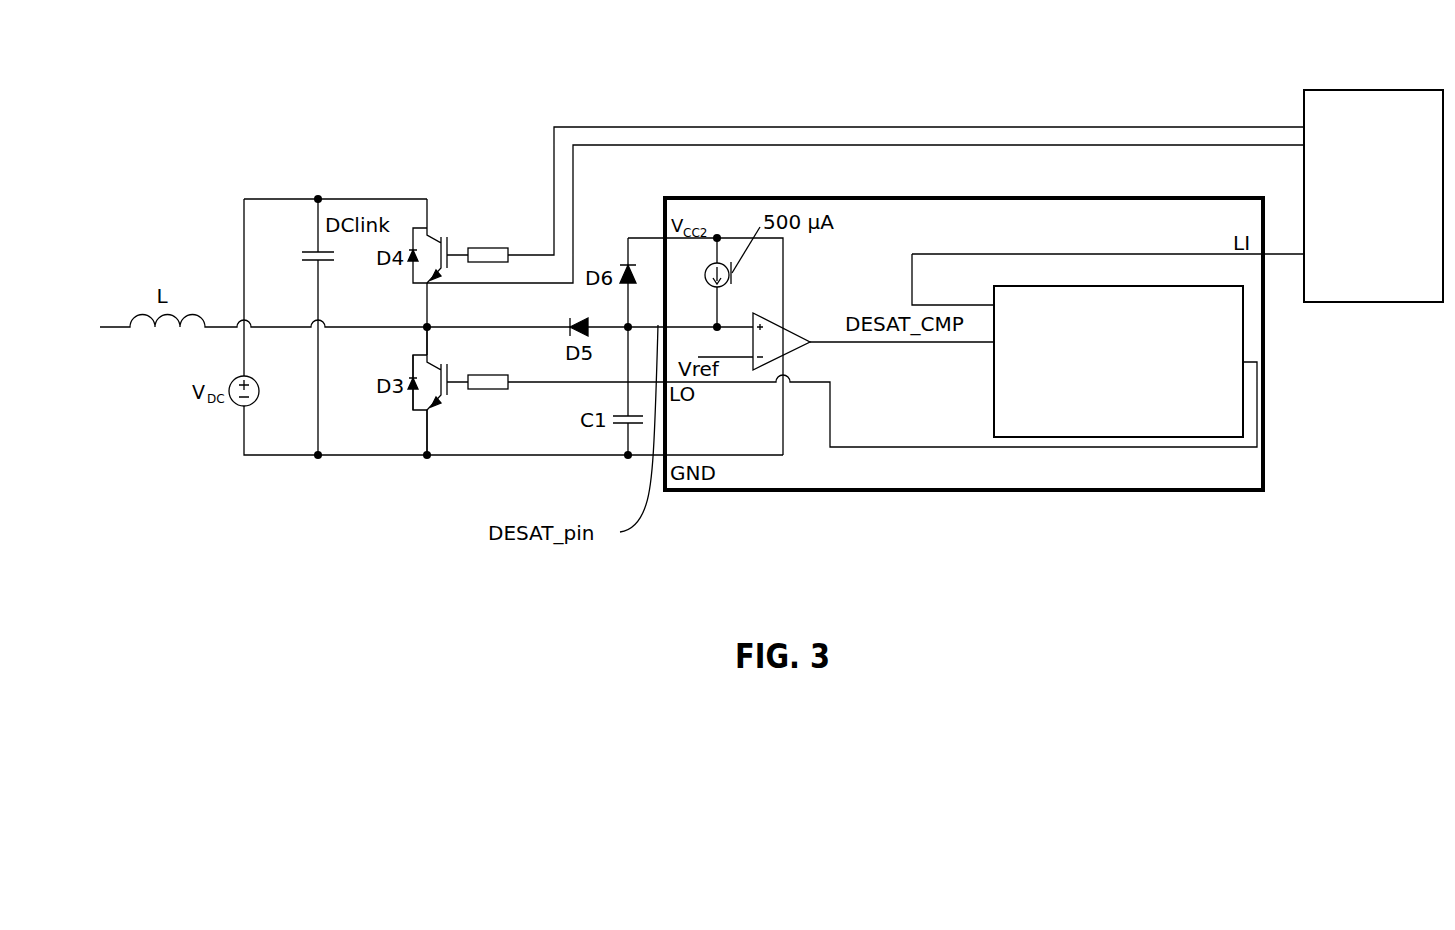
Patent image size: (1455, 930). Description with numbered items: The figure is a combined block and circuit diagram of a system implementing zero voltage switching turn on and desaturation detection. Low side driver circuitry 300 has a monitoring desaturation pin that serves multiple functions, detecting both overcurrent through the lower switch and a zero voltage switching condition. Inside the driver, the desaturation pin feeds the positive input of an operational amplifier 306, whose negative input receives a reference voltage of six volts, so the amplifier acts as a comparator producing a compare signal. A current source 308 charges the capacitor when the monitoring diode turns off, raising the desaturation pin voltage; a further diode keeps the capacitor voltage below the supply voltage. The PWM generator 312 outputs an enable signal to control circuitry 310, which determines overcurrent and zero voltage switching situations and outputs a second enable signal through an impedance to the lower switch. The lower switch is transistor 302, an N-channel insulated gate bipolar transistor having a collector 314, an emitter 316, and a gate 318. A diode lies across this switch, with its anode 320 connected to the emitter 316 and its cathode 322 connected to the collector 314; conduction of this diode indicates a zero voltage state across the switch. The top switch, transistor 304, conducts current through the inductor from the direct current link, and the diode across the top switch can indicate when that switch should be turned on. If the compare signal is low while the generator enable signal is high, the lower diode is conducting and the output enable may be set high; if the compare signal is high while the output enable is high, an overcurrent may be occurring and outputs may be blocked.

The low side driver circuitry 300 is at (1003, 198).
The lower switch transistor 302 is at (473, 397).
The top switch transistor 304 is at (458, 235).
The operational amplifier 306 is at (784, 326).
The current source 308 is at (723, 263).
The control circuitry 310 is at (1118, 361).
The PWM generator 312 is at (1373, 196).
The collector 314 is at (451, 340).
The emitter 316 is at (451, 432).
The gate 318 is at (480, 368).
The anode 320 is at (387, 413).
The cathode 322 is at (387, 355).